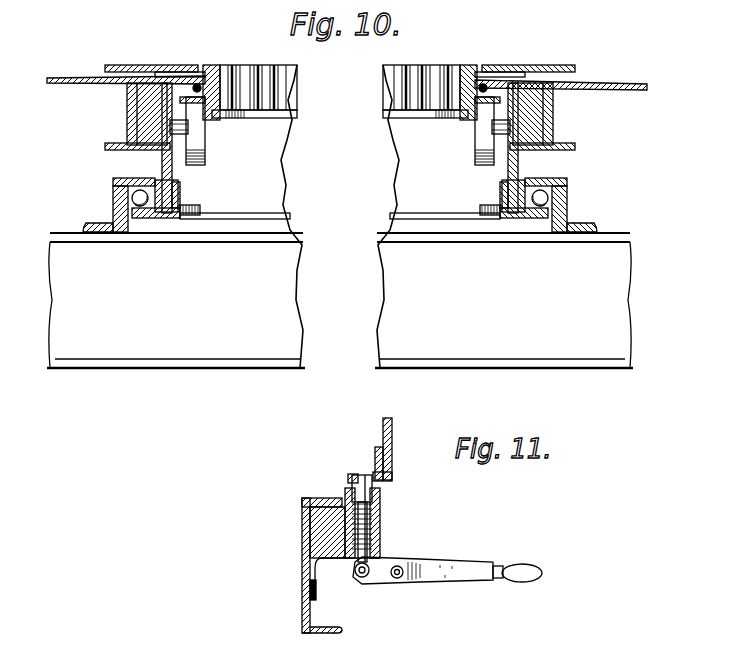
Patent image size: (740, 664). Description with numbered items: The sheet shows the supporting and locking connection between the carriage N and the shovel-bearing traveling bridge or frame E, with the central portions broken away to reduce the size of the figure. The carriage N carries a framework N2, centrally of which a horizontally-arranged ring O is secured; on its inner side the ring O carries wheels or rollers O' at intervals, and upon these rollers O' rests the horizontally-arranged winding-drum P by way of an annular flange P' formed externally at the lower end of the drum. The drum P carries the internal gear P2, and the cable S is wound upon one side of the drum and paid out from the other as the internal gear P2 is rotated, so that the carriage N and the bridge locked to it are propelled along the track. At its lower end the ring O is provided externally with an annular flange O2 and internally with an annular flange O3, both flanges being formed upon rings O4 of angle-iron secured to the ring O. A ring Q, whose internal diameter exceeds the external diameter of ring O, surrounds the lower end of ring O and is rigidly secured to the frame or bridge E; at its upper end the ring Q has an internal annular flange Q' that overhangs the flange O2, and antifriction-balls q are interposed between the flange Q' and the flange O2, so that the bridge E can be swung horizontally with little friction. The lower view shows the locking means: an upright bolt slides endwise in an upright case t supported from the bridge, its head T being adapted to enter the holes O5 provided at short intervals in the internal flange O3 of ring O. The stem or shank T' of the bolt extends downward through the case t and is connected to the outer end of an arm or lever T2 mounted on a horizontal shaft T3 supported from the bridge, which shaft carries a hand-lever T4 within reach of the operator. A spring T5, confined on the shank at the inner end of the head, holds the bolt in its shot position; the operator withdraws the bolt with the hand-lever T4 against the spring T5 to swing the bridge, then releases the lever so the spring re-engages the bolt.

In FIG. 10, the cable S is at (88, 77).
In FIG. 10, the winding-drum P is at (340, 71).
In FIG. 10, the annular flange P' is at (304, 67).
In FIG. 10, the internal gear P2 is at (294, 86).
In FIG. 10, the carriage N is at (105, 145).
In FIG. 10, the framework N2 is at (348, 127).
In FIG. 10, the ring O is at (363, 148).
In FIG. 11, the ring O is at (403, 446).
In FIG. 10, the rollers O' is at (340, 131).
In FIG. 10, the external annular flange O2 is at (142, 218).
In FIG. 10, the internal annular flange O3 is at (212, 222).
In FIG. 11, the internal annular flange O3 is at (348, 478).
In FIG. 10, the angle-iron rings O4 is at (178, 192).
In FIG. 11, the angle-iron rings O4 is at (375, 452).
In FIG. 10, the holes O5 is at (190, 215).
In FIG. 11, the holes O5 is at (392, 478).
In FIG. 10, the ring Q is at (361, 209).
In FIG. 10, the annular flange Q' is at (360, 169).
In FIG. 10, the antifriction-balls q is at (128, 212).
In FIG. 10, the frame or bridge E is at (190, 330).
In FIG. 11, the frame or bridge E is at (302, 545).
In FIG. 11, the head of the bolt T is at (325, 518).
In FIG. 11, the stem or shank of the bolt T' is at (386, 523).
In FIG. 11, the upright case t is at (381, 539).
In FIG. 11, the arm or lever T2 is at (368, 582).
In FIG. 11, the shaft T3 is at (400, 586).
In FIG. 11, the hand-lever T4 is at (479, 570).
In FIG. 11, the spring T5 is at (382, 555).